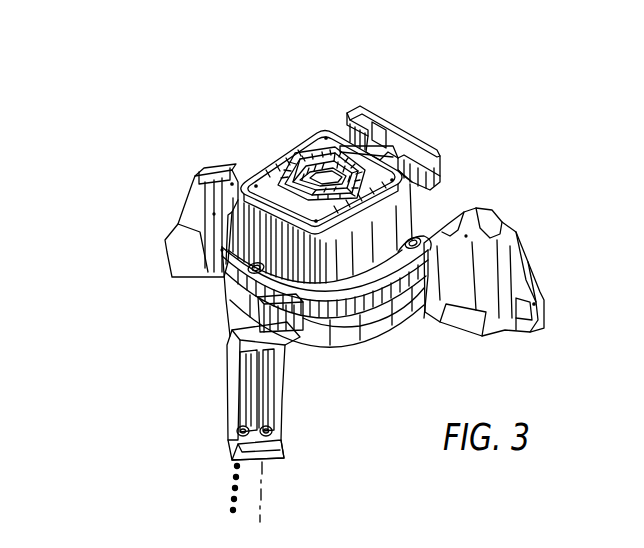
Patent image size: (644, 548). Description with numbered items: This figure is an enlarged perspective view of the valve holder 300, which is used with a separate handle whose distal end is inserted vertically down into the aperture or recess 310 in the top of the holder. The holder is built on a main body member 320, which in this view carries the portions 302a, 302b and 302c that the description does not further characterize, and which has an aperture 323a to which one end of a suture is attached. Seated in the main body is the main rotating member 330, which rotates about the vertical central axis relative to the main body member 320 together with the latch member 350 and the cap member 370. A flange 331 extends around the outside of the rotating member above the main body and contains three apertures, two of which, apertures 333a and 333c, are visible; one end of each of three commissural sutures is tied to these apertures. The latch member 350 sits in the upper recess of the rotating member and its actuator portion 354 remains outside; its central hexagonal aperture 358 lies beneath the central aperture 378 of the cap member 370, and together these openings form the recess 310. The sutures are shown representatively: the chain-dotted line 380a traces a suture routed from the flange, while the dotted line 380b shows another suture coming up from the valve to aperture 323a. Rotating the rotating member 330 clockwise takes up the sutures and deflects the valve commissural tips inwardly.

The valve holder 300 is at (597, 104).
The aperture or recess 310 is at (308, 156).
The main body member 320 is at (528, 259).
The first leg 302a is at (285, 417).
The second leg 302b is at (178, 223).
The third leg 302c is at (426, 316).
The aperture 323a is at (230, 431).
The main rotating member 330 is at (432, 202).
The flange 331 is at (384, 337).
The aperture 333a is at (227, 303).
The aperture 333c is at (428, 208).
The latch member 350 is at (383, 102).
The actuator portion 354 is at (416, 142).
The hexagonal aperture 358 is at (263, 170).
The cap member 370 is at (265, 172).
The central aperture 378 is at (310, 164).
The suture 380a is at (270, 384).
The suture 380b is at (230, 485).